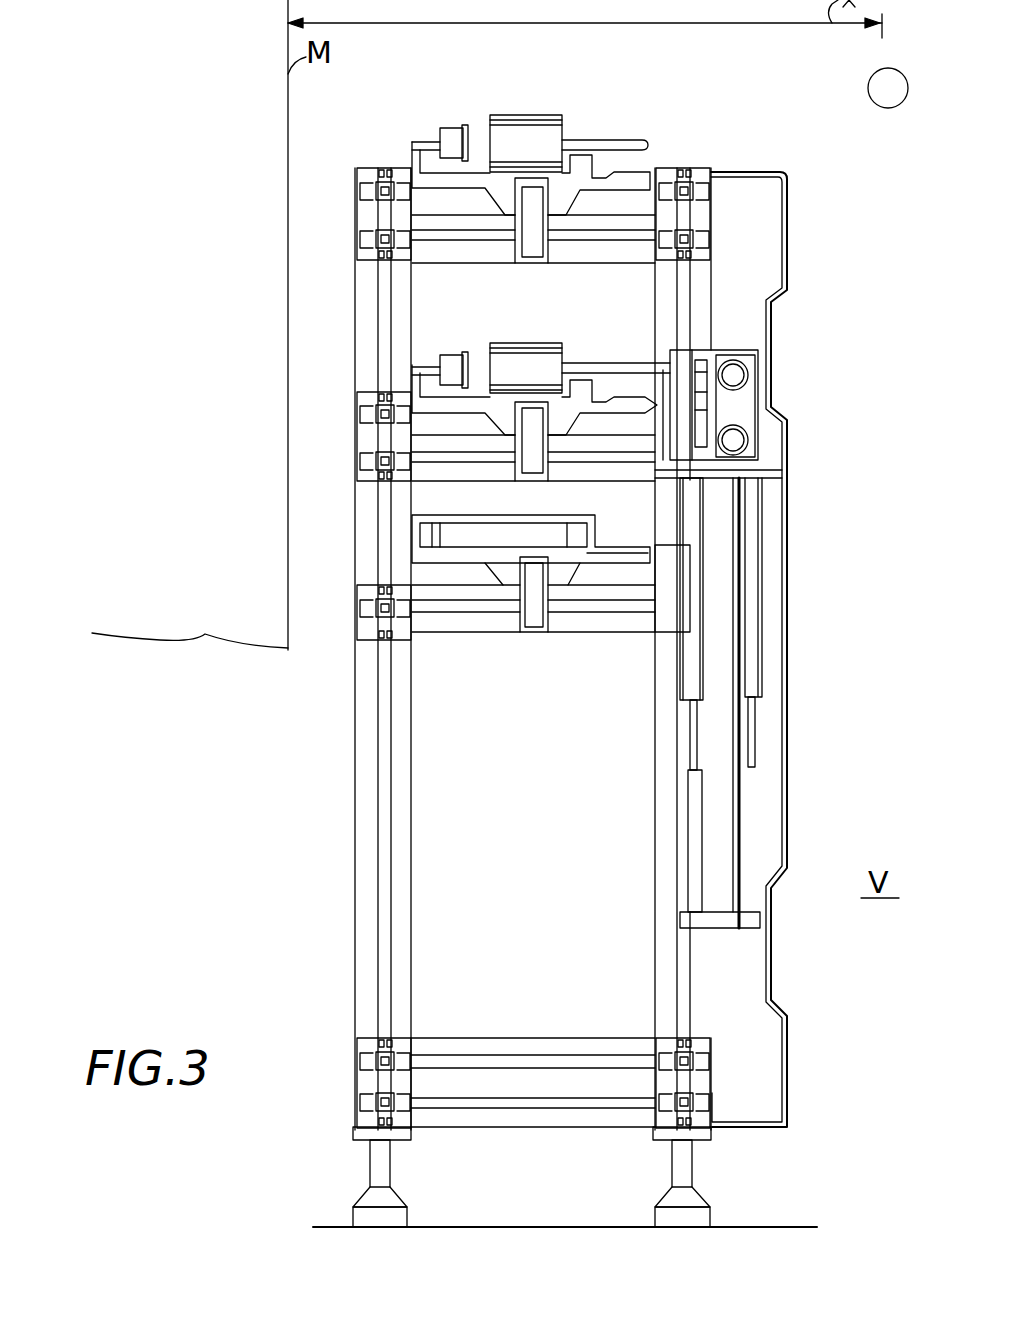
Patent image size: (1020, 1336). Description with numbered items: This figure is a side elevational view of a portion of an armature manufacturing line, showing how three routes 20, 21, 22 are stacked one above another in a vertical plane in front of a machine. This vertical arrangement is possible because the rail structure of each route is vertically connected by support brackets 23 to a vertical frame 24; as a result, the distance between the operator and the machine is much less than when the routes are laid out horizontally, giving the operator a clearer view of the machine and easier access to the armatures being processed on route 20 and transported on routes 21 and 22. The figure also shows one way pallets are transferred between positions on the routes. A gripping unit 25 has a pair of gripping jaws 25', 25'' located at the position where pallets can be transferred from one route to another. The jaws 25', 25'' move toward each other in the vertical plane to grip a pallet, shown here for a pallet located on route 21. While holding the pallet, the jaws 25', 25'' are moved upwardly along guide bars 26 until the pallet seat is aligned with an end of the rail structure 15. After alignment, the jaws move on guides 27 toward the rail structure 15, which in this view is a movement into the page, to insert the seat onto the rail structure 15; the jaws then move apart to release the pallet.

The rail structure 15 is at (538, 260).
The route 20 is at (662, 152).
The route 21 is at (787, 414).
The route 22 is at (794, 664).
The support brackets 23 is at (480, 258).
The vertical frame 24 is at (352, 714).
The gripping unit 25 is at (744, 380).
The gripping jaw 25' is at (665, 332).
The gripping jaw 25'' is at (744, 477).
The guide bars 26 is at (730, 783).
The guides 27 is at (740, 375).